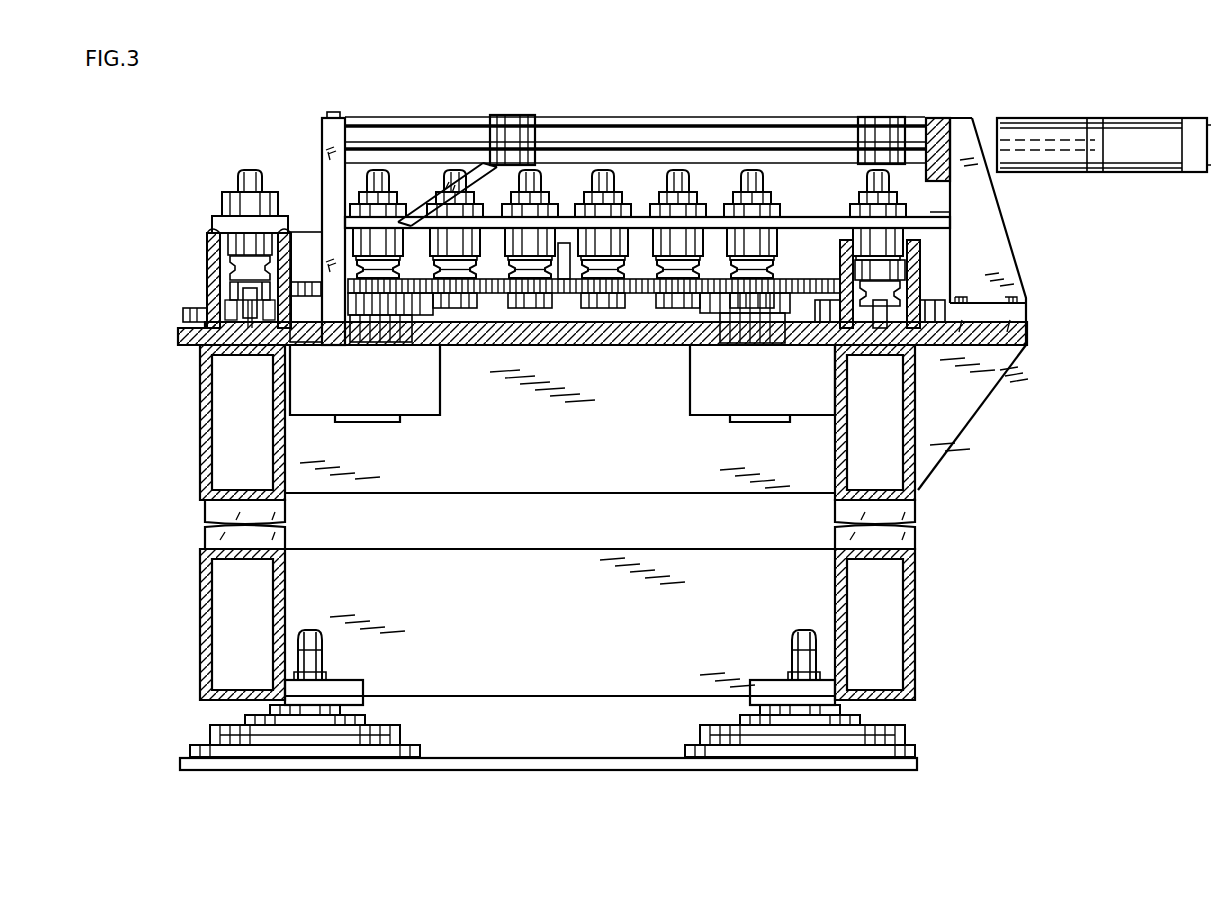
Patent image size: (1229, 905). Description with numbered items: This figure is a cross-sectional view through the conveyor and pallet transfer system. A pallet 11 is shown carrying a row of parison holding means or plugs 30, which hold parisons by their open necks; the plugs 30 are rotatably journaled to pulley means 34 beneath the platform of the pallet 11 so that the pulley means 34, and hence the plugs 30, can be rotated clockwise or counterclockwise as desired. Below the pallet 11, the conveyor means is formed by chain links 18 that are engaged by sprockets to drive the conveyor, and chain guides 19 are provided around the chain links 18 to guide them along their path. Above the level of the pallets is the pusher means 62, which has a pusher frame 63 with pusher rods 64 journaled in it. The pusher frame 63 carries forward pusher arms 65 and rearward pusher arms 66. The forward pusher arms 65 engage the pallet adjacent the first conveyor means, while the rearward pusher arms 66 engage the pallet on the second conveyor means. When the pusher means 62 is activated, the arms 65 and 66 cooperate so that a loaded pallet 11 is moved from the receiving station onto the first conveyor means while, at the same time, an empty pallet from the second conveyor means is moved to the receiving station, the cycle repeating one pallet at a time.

The pallet 11 is at (785, 217).
The chain link 18 is at (215, 270).
The chain guide 19 is at (228, 295).
The parison holding means or plug 30 is at (538, 183).
The pulley means 34 is at (772, 268).
The pusher means 62 is at (1062, 172).
The pusher frame 63 is at (512, 128).
The pusher rod 64 is at (400, 135).
The forward pusher arm 65 is at (440, 180).
The rearward pusher arm 66 is at (935, 208).